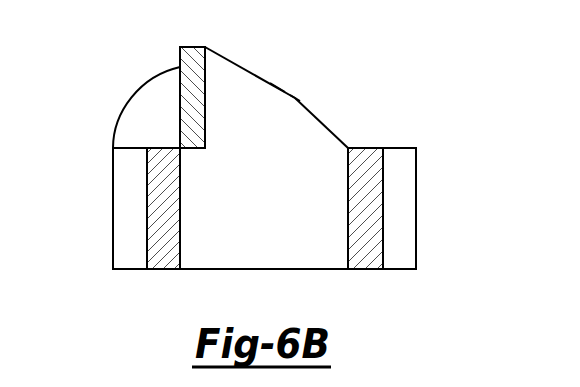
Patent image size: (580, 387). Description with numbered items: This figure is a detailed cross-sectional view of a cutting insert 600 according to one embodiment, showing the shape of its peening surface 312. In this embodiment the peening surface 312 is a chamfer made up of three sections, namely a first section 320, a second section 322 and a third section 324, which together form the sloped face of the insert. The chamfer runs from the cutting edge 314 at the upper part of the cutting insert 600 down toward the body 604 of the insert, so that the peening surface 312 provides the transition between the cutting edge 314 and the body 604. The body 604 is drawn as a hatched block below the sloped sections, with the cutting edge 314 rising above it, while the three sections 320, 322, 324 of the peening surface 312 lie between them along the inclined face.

The cutting insert 600 is at (86, 198).
The cutting edge 314 is at (176, 47).
The first section 320 is at (238, 64).
The peening surface 312 is at (299, 96).
The second section 322 is at (280, 90).
The third section 324 is at (328, 127).
The body 604 is at (162, 282).